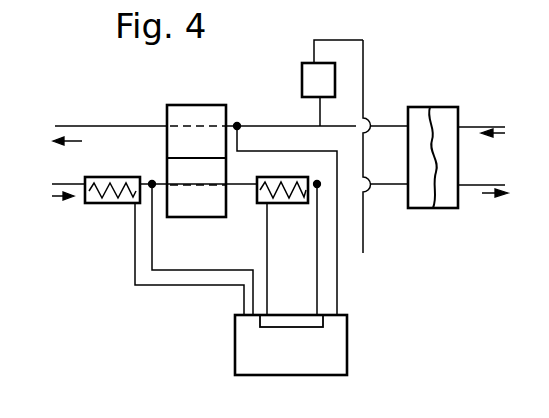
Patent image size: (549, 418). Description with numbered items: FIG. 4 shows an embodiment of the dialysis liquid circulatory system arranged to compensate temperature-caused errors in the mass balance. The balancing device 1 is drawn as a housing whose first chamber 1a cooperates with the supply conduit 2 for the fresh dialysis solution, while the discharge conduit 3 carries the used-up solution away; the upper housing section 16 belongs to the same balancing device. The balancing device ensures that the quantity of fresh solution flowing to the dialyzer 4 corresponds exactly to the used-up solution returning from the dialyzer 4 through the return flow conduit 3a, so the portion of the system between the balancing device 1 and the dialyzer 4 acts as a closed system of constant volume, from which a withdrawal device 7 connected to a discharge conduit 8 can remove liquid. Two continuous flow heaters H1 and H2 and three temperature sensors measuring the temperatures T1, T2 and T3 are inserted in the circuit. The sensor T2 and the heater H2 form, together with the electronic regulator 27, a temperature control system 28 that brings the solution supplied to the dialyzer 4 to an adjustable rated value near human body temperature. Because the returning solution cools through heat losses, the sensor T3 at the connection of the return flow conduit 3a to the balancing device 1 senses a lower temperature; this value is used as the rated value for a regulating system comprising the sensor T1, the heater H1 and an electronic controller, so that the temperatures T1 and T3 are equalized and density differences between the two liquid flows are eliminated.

The balancing device 1 is at (166, 115).
The first chamber 1a is at (199, 203).
The supply conduit 2 is at (55, 185).
The discharge conduit 3 is at (68, 125).
The return flow conduit 3a is at (382, 125).
The dialyzer 4 is at (422, 208).
The withdrawal device 7 is at (307, 78).
The discharge conduit 8 is at (365, 72).
The upper housing section 16 is at (187, 114).
The electronic regulator 27 is at (307, 322).
The temperature control system 28 is at (330, 345).
The temperature sensor T1 is at (198, 234).
The temperature sensor T2 is at (326, 248).
The temperature sensor T3 is at (283, 205).
The continuous flow heater H1 is at (115, 204).
The continuous flow heater H2 is at (273, 205).